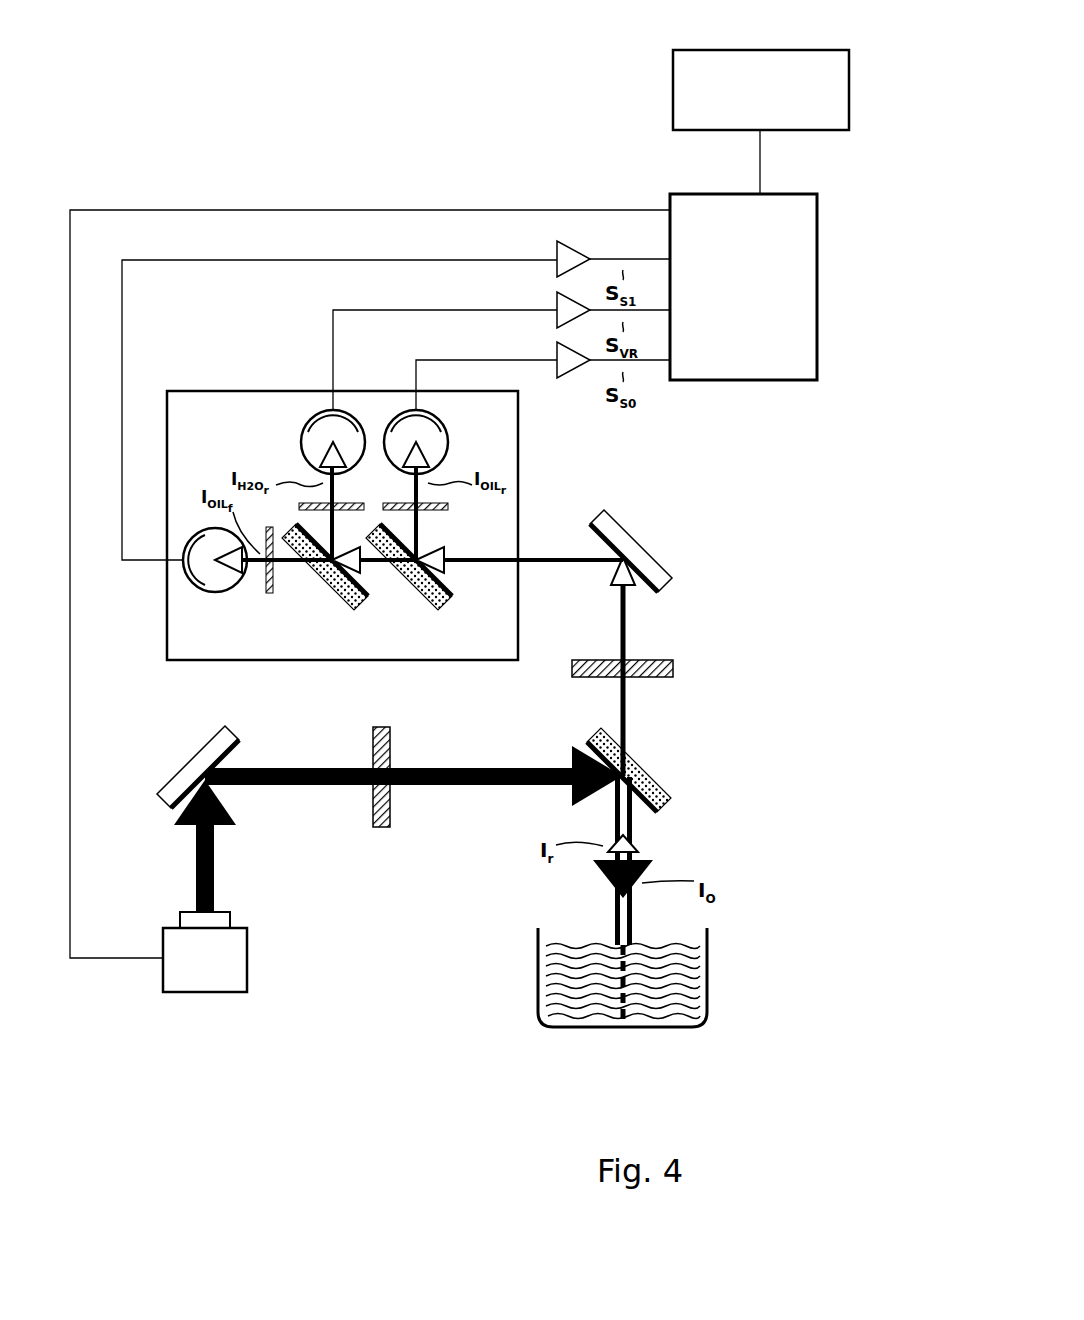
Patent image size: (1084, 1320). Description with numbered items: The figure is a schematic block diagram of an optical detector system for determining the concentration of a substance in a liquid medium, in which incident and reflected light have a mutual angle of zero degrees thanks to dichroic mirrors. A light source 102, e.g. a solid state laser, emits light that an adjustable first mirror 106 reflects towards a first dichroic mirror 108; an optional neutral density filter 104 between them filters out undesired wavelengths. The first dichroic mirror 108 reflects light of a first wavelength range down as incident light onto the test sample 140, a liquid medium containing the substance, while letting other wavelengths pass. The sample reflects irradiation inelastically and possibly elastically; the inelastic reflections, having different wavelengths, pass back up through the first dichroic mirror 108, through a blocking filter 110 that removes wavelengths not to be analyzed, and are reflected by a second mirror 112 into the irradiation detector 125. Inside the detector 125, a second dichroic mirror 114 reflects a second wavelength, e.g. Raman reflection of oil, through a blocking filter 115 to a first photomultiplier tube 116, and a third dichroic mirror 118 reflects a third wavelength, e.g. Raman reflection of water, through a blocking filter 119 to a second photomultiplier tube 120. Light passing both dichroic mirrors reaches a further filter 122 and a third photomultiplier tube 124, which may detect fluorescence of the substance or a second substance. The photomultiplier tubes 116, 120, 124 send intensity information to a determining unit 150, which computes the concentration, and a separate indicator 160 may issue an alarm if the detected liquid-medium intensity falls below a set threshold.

The light source 102 is at (232, 952).
The neutral density filter 104 is at (381, 840).
The first mirror 106 is at (173, 767).
The first dichroic mirror 108 is at (657, 770).
The blocking filter 110 is at (649, 670).
The second mirror 112 is at (658, 551).
The second dichroic mirror 114 is at (416, 597).
The blocking filter 115 is at (441, 507).
The first photomultiplier tube 116 is at (442, 442).
The third dichroic mirror 118 is at (332, 597).
The blocking filter 119 is at (308, 507).
The second photomultiplier tube 120 is at (308, 442).
The filter 122 is at (269, 597).
The third photomultiplier tube 124 is at (213, 597).
The irradiation detector 125 is at (395, 525).
The test sample 140 is at (649, 977).
The determining unit 150 is at (771, 287).
The indicator 160 is at (849, 90).